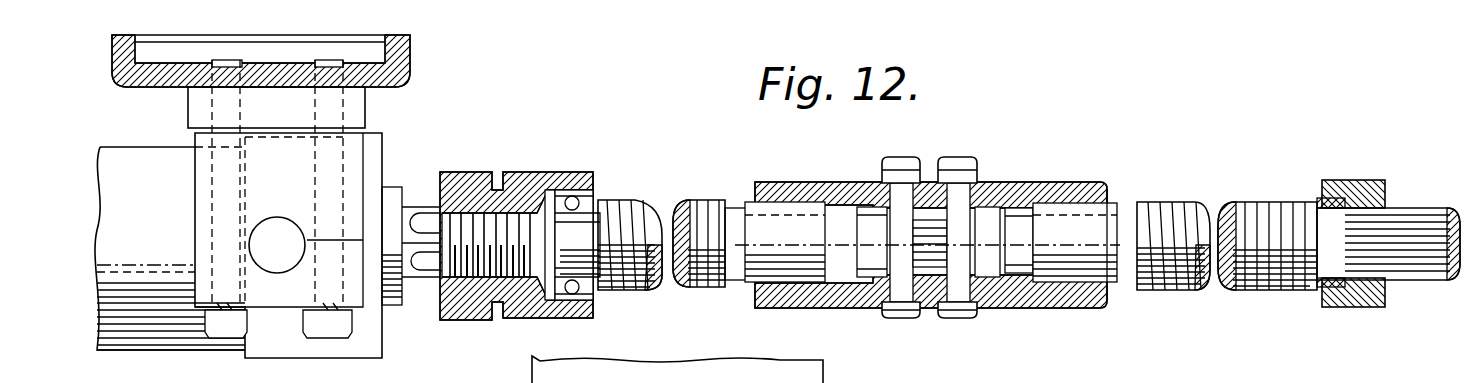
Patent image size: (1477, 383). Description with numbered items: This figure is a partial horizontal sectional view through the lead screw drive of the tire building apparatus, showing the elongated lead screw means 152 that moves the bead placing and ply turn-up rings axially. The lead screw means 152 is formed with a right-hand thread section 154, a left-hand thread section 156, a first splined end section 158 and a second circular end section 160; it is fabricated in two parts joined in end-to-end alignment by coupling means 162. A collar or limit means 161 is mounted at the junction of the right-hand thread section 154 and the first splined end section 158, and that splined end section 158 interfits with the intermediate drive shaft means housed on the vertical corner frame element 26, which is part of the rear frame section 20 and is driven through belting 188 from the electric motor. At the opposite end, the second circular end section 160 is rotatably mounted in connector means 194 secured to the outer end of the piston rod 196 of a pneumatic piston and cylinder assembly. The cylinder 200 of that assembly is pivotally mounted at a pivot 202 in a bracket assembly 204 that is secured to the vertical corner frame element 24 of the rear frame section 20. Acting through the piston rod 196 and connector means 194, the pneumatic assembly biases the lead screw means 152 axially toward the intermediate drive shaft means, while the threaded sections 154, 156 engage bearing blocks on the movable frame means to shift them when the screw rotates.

The vertical corner frame element 24 is at (410, 50).
The bracket assembly 204 is at (357, 110).
The cylinder 200 is at (162, 157).
The pivot mounting 202 is at (298, 200).
The piston rod 196 is at (417, 207).
The connector means 194 is at (542, 162).
The second circular end section 160 is at (574, 233).
The left-hand thread section 156 is at (643, 208).
The coupling means 162 is at (840, 192).
The lead screw means 152 is at (1098, 155).
The right-hand thread section 154 is at (1247, 202).
The first splined end section 158 is at (1412, 208).
The collar or limit means 161 is at (1357, 308).
The vertical corner frame element 26 is at (803, 377).
The belting 188 is at (962, 375).
The rear frame section 20 is at (165, 353).